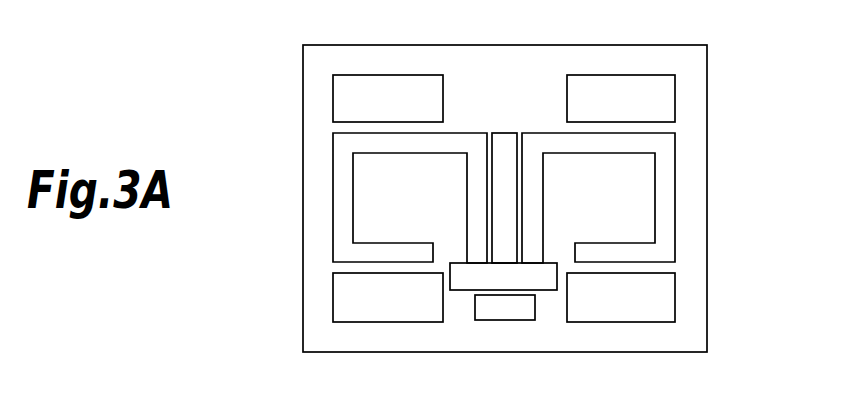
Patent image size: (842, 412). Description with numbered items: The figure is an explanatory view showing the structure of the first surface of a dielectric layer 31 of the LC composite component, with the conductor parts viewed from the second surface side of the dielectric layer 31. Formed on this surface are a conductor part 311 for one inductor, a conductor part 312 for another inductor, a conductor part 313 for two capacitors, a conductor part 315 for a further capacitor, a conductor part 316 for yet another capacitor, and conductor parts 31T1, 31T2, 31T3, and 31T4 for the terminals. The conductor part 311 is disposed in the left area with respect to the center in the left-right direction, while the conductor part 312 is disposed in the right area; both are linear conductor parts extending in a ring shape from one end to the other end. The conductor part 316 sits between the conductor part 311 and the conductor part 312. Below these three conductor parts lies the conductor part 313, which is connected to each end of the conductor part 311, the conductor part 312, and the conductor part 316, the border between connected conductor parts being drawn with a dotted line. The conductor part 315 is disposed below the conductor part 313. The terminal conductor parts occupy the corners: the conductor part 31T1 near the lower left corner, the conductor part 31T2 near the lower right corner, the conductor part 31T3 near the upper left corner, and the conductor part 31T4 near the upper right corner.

The dielectric layer 31 is at (707, 55).
The conductor part for the inductor 311 is at (333, 195).
The conductor part for the inductor 312 is at (675, 195).
The conductor part for the capacitors 313 is at (462, 290).
The conductor part for the capacitor 315 is at (508, 320).
The conductor part for the capacitor 316 is at (505, 133).
The conductor part for the terminal 31T1 is at (333, 297).
The conductor part for the terminal 31T2 is at (675, 297).
The conductor part for the terminal 31T3 is at (333, 97).
The conductor part for the terminal 31T4 is at (675, 97).